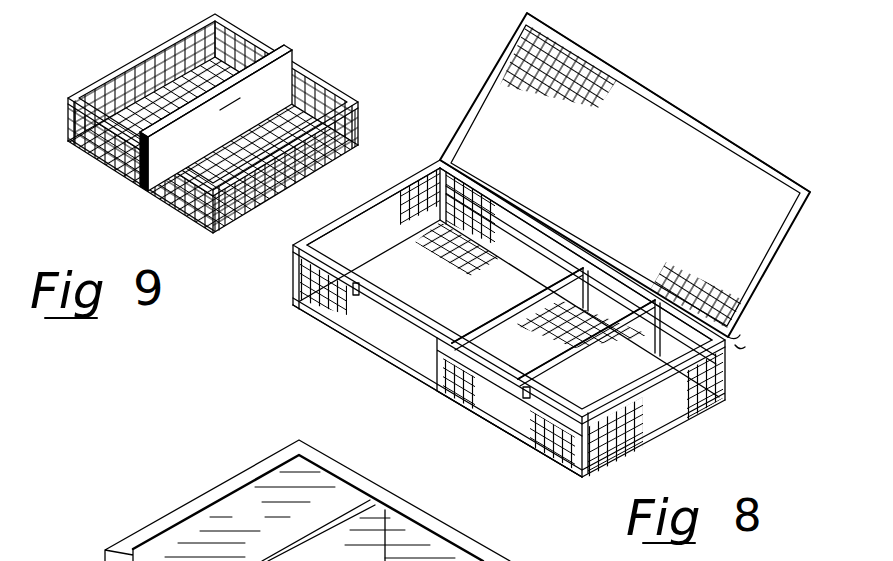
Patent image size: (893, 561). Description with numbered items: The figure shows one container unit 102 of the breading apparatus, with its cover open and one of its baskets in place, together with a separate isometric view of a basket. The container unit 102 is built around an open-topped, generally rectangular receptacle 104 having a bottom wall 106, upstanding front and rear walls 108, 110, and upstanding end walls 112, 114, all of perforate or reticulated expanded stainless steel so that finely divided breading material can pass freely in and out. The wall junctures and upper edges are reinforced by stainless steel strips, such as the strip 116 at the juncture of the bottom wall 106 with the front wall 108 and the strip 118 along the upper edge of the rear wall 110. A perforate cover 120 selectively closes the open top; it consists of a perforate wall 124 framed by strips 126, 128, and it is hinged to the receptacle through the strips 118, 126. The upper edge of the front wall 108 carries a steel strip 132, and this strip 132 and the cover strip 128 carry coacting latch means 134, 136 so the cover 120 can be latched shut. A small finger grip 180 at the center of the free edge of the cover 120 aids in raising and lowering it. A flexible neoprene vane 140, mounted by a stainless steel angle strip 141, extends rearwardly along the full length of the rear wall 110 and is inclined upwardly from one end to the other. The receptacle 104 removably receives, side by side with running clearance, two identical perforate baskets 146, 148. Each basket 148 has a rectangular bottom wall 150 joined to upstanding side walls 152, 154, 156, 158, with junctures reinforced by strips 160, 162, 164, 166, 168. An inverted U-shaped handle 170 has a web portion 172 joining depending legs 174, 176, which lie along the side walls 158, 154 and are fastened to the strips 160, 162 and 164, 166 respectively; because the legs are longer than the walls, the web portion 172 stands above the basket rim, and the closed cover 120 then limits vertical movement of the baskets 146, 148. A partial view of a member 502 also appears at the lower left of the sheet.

In FIG. 8, the container unit 102 is at (725, 410).
In FIG. 8, the receptacle 104 is at (297, 273).
In FIG. 8, the bottom wall 106 is at (388, 273).
In FIG. 8, the front wall 108 is at (373, 322).
In FIG. 8, the rear wall 110 is at (502, 213).
In FIG. 8, the end wall 112 is at (363, 232).
In FIG. 8, the end wall 114 is at (660, 411).
In FIG. 8, the strip 116 is at (392, 362).
In FIG. 8, the strip 118 is at (633, 288).
In FIG. 8, the cover 120 is at (693, 185).
In FIG. 8, the perforate wall 124 is at (753, 148).
In FIG. 8, the strip 126 is at (627, 268).
In FIG. 8, the strip 128 is at (697, 125).
In FIG. 8, the steel strip 132 is at (452, 311).
In FIG. 8, the latch means 134 is at (362, 285).
In FIG. 8, the latch means 136 is at (593, 50).
In FIG. 8, the vane 140 is at (740, 340).
In FIG. 8, the angle strip 141 is at (745, 352).
In FIG. 8, the basket 146 is at (592, 266).
In FIG. 9, the basket 148 is at (99, 68).
In FIG. 9, the bottom wall 150 is at (352, 100).
In FIG. 9, the side wall 152 is at (150, 70).
In FIG. 9, the side wall 154 is at (313, 93).
In FIG. 9, the side wall 156 is at (273, 180).
In FIG. 9, the side wall 158 is at (107, 147).
In FIG. 9, the reinforcing strip 160 is at (178, 212).
In FIG. 9, the reinforcing strip 162 is at (68, 133).
In FIG. 9, the reinforcing strip 164 is at (250, 45).
In FIG. 9, the reinforcing strip 166 is at (262, 55).
In FIG. 9, the reinforcing strip 168 is at (208, 227).
In FIG. 9, the handle 170 is at (293, 127).
In FIG. 9, the web portion 172 is at (206, 92).
In FIG. 9, the leg 174 is at (142, 157).
In FIG. 9, the leg 176 is at (288, 66).
In FIG. 8, the finger grip 180 is at (668, 100).
In FIG. 8, the roof member 502 is at (307, 500).